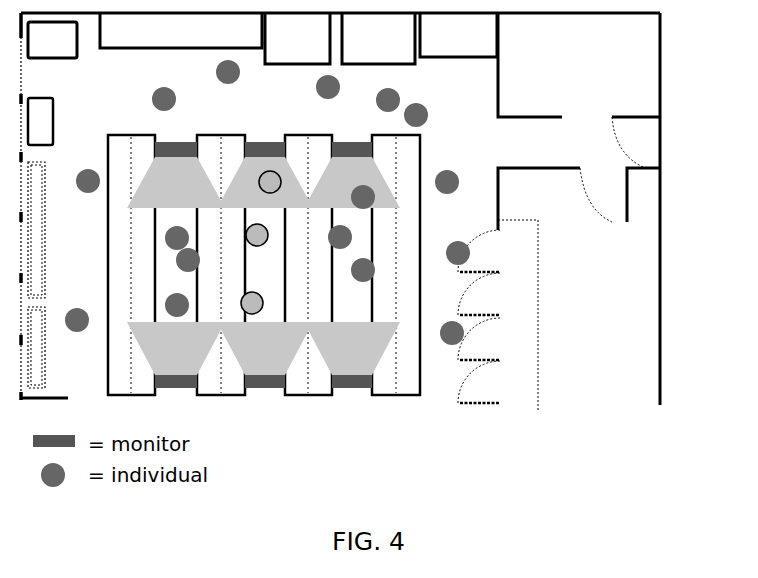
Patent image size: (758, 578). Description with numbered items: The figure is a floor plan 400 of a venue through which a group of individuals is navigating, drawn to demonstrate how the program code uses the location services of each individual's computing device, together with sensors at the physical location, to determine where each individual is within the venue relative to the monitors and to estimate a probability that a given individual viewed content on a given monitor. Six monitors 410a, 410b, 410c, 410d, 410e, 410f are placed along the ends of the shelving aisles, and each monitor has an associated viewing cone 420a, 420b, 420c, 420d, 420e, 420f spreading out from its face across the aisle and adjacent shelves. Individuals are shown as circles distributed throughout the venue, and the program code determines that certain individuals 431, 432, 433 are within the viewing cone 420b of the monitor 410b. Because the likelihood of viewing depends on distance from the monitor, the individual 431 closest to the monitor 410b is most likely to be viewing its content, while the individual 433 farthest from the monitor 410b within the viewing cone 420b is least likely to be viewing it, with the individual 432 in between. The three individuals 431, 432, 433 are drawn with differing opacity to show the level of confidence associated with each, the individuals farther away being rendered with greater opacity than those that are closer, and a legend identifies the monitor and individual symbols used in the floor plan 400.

The floor plan 400 is at (712, 81).
The monitor 410a is at (174, 149).
The monitor 410b is at (259, 149).
The monitor 410c is at (346, 149).
The monitor 410d is at (174, 388).
The monitor 410e is at (256, 388).
The monitor 410f is at (348, 388).
The viewing cone 420a is at (176, 182).
The viewing cone 420b is at (265, 187).
The viewing cone 420c is at (352, 182).
The viewing cone 420d is at (176, 348).
The viewing cone 420e is at (265, 348).
The viewing cone 420f is at (352, 348).
The individual 431 is at (281, 181).
The individual 432 is at (268, 234).
The individual 433 is at (268, 302).